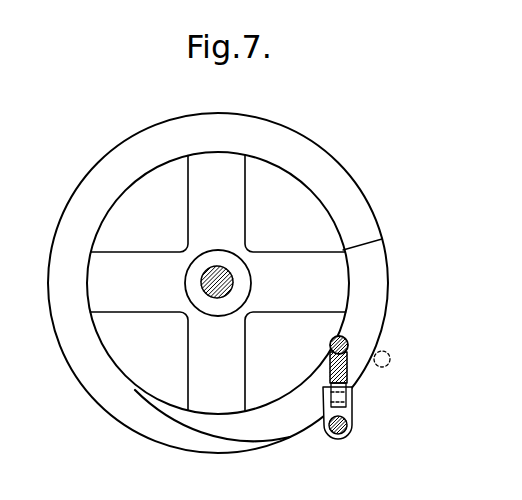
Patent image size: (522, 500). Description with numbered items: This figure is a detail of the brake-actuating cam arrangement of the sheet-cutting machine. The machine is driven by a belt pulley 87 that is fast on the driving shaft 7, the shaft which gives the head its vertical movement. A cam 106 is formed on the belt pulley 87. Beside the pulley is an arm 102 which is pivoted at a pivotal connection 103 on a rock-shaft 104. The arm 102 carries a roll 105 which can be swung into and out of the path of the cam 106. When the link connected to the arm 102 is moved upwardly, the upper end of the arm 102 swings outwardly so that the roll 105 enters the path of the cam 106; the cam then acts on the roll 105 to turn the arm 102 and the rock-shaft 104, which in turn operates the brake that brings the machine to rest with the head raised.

The driving shaft 7 is at (212, 295).
The belt pulley 87 is at (378, 223).
The arm 102 is at (347, 368).
The pivotal connection 103 is at (353, 398).
The rock-shaft 104 is at (350, 427).
The roll 105 is at (348, 344).
The cam 106 is at (262, 442).